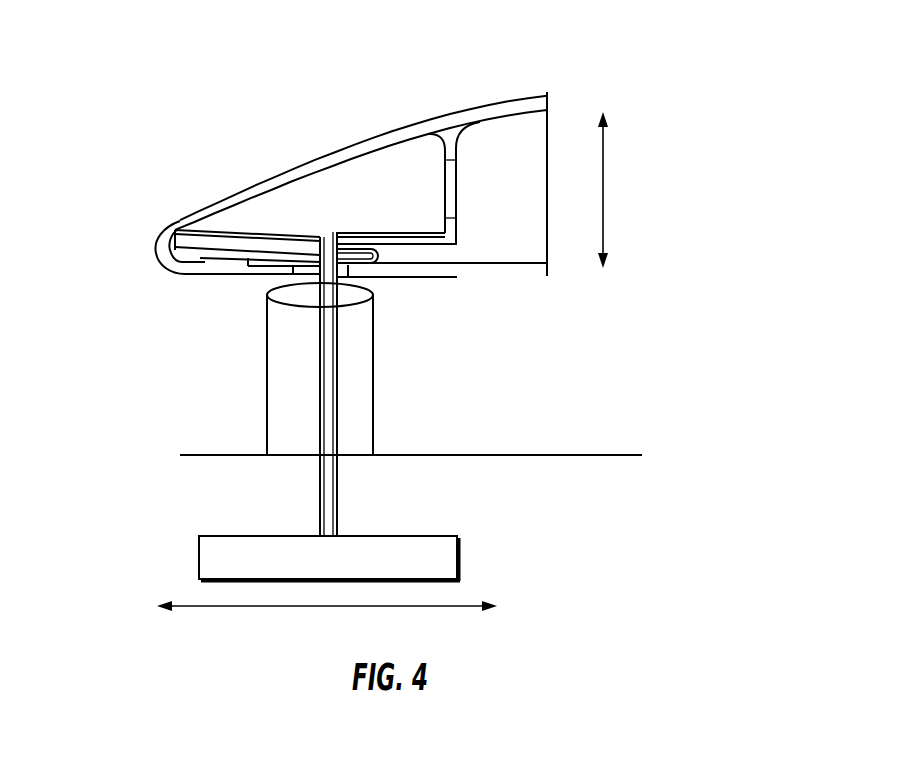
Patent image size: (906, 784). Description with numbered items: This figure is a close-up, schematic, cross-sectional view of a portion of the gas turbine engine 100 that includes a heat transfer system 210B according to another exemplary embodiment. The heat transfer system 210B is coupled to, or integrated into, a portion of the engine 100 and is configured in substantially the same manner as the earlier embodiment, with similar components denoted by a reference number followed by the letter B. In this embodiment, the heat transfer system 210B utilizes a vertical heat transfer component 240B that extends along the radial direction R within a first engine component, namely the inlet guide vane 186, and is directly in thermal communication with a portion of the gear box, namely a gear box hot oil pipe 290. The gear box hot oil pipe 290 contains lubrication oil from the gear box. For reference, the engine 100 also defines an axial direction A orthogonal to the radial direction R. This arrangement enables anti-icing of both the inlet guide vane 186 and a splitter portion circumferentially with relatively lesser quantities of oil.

The engine 100 is at (648, 68).
The heat transfer system 210B is at (136, 249).
The inlet guide vane 186 is at (267, 365).
The vertical heat transfer component 240B is at (338, 408).
The gear box hot oil pipe 290 is at (460, 562).
The radial direction R is at (603, 193).
The axial direction A is at (248, 607).